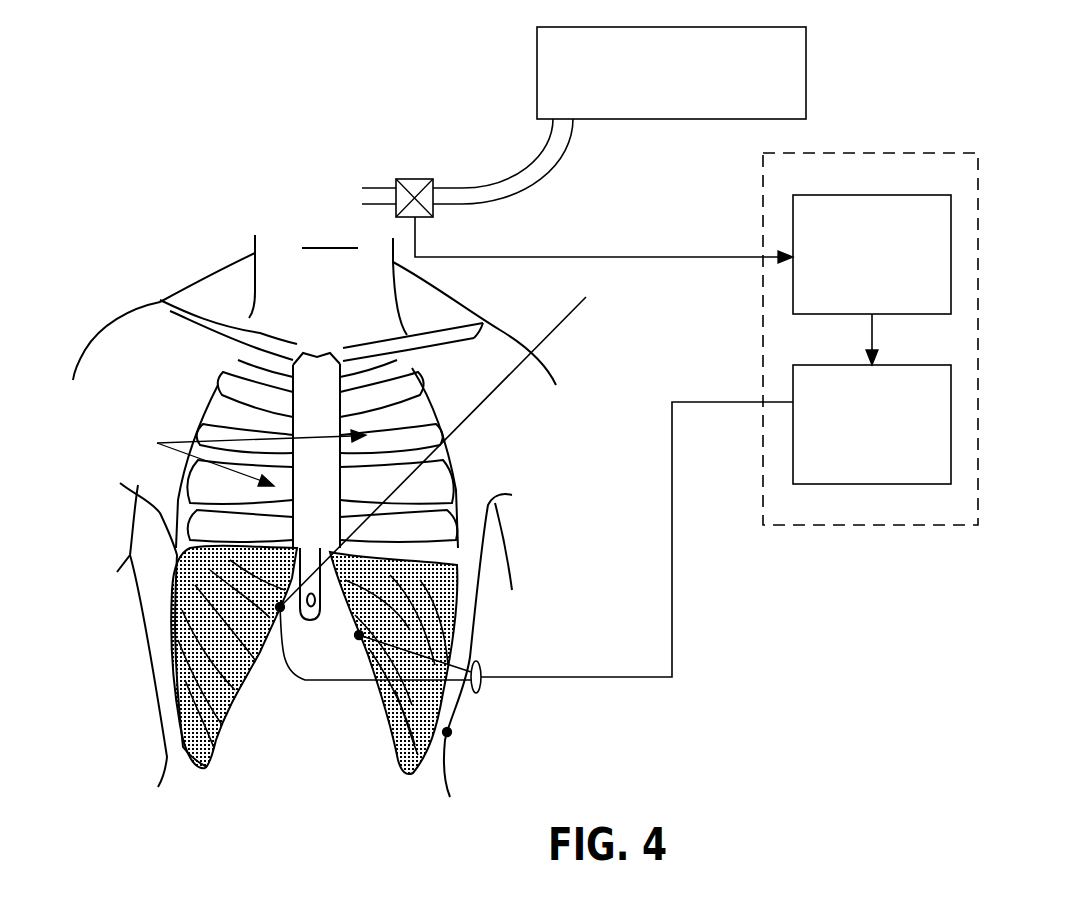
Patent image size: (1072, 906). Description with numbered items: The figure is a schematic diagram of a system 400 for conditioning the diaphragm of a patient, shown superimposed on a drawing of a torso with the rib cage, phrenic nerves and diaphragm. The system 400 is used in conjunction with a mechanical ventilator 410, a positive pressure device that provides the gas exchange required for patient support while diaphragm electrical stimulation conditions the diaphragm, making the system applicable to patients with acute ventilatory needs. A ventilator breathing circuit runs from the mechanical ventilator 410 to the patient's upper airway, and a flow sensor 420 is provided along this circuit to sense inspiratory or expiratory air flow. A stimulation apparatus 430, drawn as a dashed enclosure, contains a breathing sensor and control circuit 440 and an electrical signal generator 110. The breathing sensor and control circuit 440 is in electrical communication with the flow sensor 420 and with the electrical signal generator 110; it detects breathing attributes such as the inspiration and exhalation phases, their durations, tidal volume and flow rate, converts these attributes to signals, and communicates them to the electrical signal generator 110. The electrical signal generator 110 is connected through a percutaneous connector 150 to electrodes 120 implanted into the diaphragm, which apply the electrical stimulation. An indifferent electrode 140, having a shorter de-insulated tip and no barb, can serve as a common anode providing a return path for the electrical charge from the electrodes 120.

The system 400 is at (697, 703).
The mechanical ventilator 410 is at (807, 82).
The flow sensor 420 is at (407, 178).
The stimulation apparatus 430 is at (980, 313).
The breathing sensor and control circuit 440 is at (952, 247).
The electrical signal generator 110 is at (953, 402).
The electrodes 120 is at (283, 605).
The percutaneous connector 150 is at (480, 692).
The indifferent electrode 140 is at (451, 737).